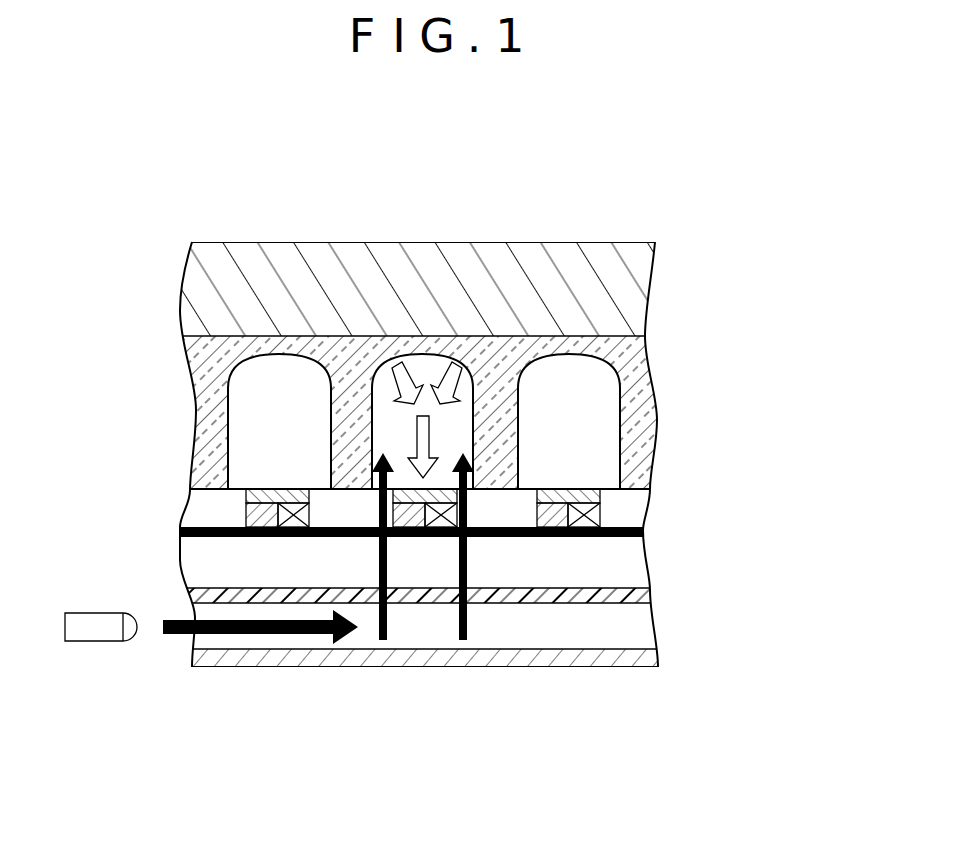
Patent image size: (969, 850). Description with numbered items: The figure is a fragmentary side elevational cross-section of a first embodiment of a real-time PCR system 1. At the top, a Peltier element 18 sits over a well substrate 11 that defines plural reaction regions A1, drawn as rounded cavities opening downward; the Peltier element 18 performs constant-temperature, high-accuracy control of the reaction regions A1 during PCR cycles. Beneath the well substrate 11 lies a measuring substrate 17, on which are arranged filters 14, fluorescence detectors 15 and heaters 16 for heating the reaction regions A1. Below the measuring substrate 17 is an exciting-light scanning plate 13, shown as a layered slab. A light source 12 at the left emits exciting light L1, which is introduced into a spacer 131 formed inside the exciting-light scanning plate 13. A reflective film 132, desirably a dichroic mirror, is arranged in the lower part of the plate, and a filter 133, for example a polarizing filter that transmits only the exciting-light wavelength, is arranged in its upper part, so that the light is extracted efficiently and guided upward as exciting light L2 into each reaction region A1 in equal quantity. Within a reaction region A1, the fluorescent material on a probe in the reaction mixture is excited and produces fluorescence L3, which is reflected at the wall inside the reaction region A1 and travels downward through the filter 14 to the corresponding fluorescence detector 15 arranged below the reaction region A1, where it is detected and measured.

The real-time PCR system 1 is at (264, 206).
The Peltier element 18 is at (632, 283).
The well substrate 11 is at (640, 376).
The reaction region A1 is at (245, 385).
The fluorescence L3 is at (460, 365).
The filter 14 is at (272, 484).
The fluorescence detector 15 is at (246, 518).
The heater 16 is at (600, 515).
The measuring substrate 17 is at (640, 563).
The exciting-light scanning plate 13 is at (489, 655).
The filter 133 is at (655, 595).
The spacer 131 is at (645, 627).
The reflective film 132 is at (618, 668).
The light source 12 is at (97, 645).
The exciting light L1 is at (268, 635).
The exciting light L2 is at (460, 632).